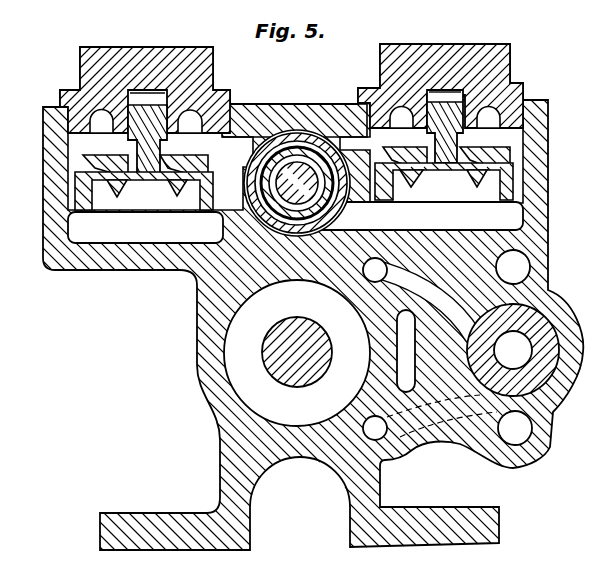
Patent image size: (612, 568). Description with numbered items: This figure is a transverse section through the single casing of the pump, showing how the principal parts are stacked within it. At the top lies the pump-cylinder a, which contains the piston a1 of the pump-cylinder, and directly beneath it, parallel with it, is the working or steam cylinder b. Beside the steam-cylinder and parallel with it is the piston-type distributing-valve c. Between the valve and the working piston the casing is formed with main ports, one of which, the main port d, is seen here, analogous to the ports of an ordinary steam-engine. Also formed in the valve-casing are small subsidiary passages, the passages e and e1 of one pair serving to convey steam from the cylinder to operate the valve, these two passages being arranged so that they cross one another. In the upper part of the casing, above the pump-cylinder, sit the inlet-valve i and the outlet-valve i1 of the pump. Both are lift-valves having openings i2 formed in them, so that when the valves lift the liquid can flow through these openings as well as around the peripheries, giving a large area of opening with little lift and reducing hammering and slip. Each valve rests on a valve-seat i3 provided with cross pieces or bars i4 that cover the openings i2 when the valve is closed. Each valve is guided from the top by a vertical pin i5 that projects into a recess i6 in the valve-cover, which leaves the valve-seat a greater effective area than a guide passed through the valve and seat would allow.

The pump-cylinder a is at (317, 133).
The piston of the pump-cylinder a1 is at (294, 111).
The working or steam cylinder b is at (297, 353).
The distributing-valve c is at (513, 350).
The main port d is at (406, 351).
The subsidiary passage e is at (418, 297).
The subsidiary passage e1 is at (423, 417).
The inlet-valve i is at (440, 74).
The outlet-valve i1 is at (145, 80).
The openings in the valves i2 is at (180, 163).
The valve-seat i3 is at (75, 181).
The cross pieces or bars i4 is at (556, 166).
The vertical pin i5 is at (123, 105).
The recess in the valve-cover i6 is at (137, 93).